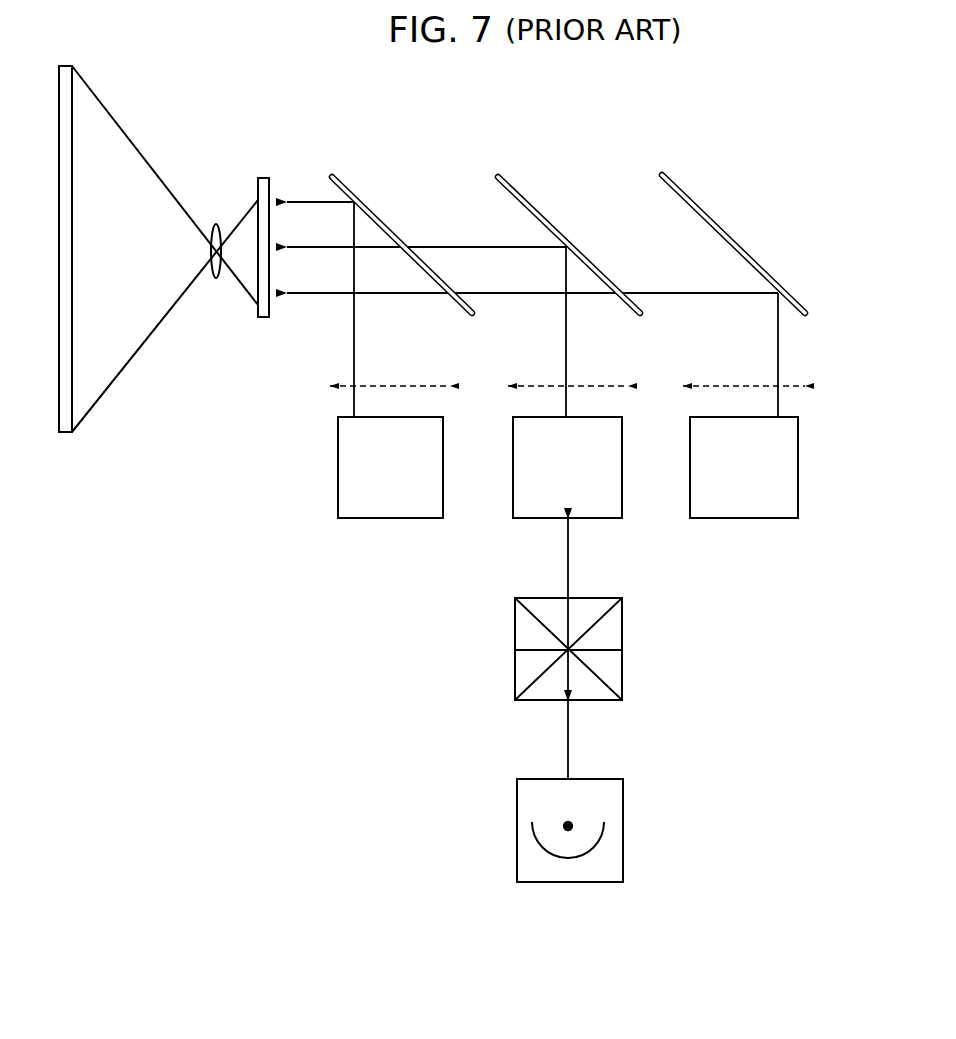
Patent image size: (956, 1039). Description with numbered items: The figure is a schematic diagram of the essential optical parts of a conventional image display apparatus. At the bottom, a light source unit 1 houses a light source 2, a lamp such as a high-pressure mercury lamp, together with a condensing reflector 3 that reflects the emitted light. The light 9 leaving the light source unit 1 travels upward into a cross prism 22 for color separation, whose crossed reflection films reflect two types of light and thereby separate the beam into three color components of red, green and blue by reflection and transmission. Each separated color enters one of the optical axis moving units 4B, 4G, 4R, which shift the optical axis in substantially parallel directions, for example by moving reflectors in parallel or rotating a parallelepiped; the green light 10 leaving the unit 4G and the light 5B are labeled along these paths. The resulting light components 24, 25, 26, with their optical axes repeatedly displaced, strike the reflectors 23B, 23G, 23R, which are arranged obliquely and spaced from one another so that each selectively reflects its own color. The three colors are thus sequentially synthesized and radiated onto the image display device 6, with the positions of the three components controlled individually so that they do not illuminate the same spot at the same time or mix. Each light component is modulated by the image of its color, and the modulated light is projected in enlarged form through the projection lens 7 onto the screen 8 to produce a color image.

The light source unit 1 is at (623, 838).
The light source 2 is at (571, 822).
The condensing reflector 3 is at (535, 837).
The optical axis moving unit 4B is at (367, 520).
The optical axis moving unit 4G is at (540, 520).
The optical axis moving unit 4R is at (720, 520).
The blue light beam 5B is at (689, 323).
The image display device 6 is at (269, 272).
The projection lens 7 is at (216, 226).
The screen 8 is at (72, 259).
The light beam from light source 9 is at (570, 746).
The green light beam 10 is at (567, 366).
The cross prism 22 is at (515, 672).
The reflector 23B is at (378, 212).
The reflector 23G is at (543, 212).
The reflector 23R is at (710, 215).
The light component 24 is at (299, 198).
The light component 25 is at (459, 243).
The light component 26 is at (669, 290).